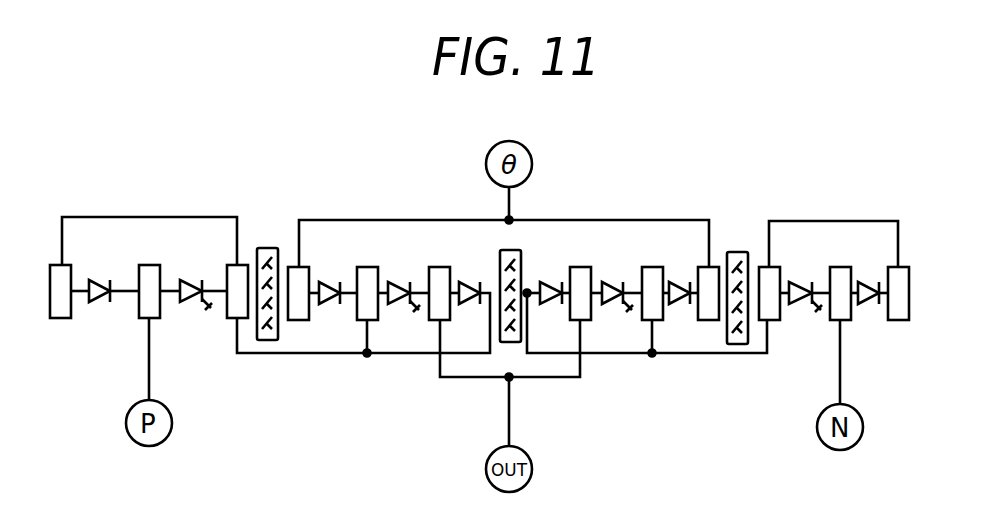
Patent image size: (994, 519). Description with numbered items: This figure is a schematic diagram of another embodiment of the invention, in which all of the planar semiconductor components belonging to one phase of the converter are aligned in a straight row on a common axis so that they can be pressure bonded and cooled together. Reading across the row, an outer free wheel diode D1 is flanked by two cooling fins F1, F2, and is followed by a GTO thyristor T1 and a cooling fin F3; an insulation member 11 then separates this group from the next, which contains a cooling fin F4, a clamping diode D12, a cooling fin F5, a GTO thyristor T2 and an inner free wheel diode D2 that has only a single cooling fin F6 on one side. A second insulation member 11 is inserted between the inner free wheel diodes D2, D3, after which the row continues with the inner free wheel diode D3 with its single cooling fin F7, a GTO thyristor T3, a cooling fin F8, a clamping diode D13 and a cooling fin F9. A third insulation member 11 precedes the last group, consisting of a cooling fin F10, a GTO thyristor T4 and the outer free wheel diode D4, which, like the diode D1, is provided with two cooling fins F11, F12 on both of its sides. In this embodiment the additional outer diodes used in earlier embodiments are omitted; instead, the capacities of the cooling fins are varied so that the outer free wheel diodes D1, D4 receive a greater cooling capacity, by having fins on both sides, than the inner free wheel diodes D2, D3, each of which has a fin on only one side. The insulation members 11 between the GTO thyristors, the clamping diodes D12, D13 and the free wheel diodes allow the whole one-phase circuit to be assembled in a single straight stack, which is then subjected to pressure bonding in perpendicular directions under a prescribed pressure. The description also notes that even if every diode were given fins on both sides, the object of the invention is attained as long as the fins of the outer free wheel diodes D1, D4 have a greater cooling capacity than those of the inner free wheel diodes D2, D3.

The insulation member 11 is at (273, 247).
The cooling fin F1 is at (60, 318).
The cooling fin F2 is at (155, 318).
The cooling fin F3 is at (231, 318).
The cooling fin F4 is at (298, 320).
The cooling fin F5 is at (360, 320).
The cooling fin F6 is at (434, 320).
The cooling fin F7 is at (586, 320).
The cooling fin F8 is at (648, 320).
The cooling fin F9 is at (705, 320).
The cooling fin F10 is at (775, 320).
The cooling fin F11 is at (846, 320).
The cooling fin F12 is at (904, 320).
The free wheel diode D1 is at (100, 280).
The free wheel diode D2 is at (467, 282).
The free wheel diode D3 is at (550, 282).
The free wheel diode D4 is at (865, 282).
The clamping diode D12 is at (328, 282).
The clamping diode D13 is at (677, 282).
The GTO thyristor T1 is at (184, 280).
The GTO thyristor T2 is at (397, 282).
The GTO thyristor T3 is at (610, 282).
The GTO thyristor T4 is at (797, 282).